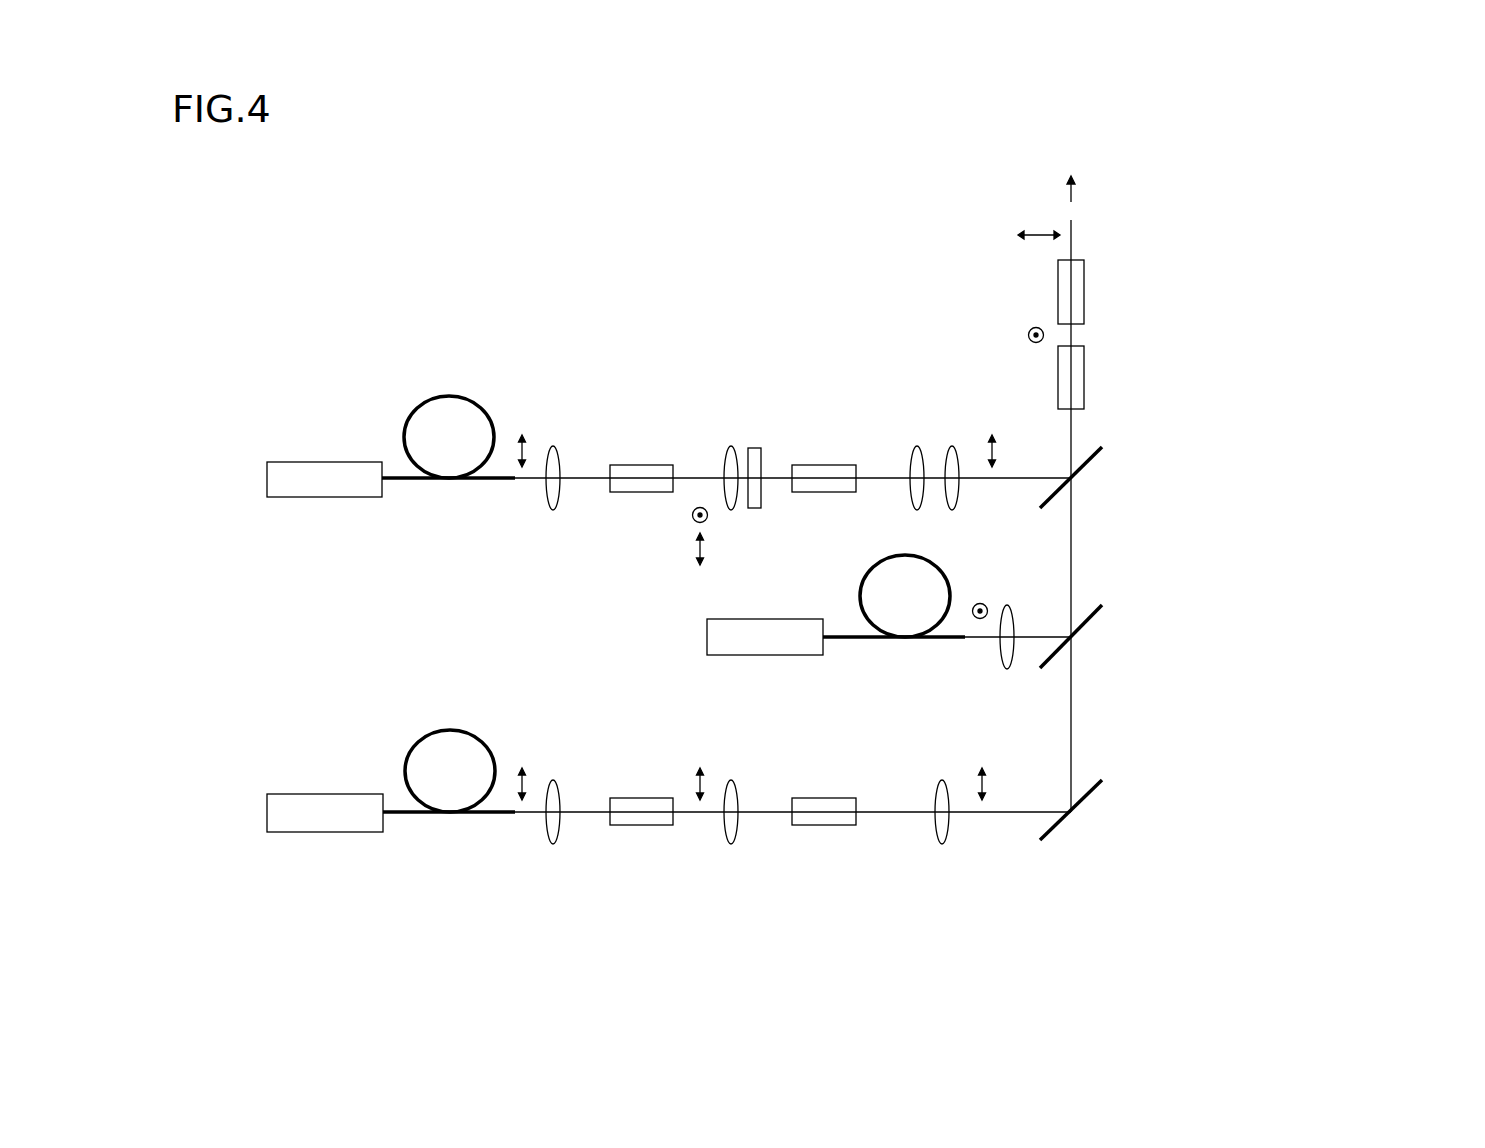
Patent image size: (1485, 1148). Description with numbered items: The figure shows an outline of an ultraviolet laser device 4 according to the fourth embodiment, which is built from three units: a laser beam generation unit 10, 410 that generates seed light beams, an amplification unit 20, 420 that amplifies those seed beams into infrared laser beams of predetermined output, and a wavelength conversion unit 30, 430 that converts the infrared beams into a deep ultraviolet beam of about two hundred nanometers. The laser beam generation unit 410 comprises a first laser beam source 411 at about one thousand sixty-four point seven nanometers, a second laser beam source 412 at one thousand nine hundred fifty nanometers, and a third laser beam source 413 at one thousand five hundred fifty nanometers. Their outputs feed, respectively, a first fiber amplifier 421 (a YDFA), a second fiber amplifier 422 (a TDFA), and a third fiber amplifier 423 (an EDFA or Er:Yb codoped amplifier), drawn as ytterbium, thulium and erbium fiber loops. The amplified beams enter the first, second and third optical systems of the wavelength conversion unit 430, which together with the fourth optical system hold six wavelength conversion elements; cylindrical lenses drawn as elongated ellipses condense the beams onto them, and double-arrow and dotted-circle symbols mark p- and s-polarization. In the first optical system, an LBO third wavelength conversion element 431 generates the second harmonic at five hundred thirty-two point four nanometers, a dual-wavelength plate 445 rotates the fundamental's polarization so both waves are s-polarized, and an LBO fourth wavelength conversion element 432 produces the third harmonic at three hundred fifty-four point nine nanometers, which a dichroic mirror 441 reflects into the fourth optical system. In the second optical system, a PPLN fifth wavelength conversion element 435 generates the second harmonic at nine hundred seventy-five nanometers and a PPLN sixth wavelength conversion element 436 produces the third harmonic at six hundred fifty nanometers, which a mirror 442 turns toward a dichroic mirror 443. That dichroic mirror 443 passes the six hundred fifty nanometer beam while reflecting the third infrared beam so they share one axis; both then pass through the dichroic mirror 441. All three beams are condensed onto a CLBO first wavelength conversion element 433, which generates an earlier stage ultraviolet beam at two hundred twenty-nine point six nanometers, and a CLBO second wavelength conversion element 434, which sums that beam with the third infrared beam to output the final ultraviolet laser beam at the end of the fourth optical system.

The ultraviolet laser device 4 is at (602, 150).
The seed light source unit 10 is at (508, 576).
The laser beam generation unit 410 is at (318, 300).
The fiber amplifier unit 20 is at (684, 566).
The amplification unit 420 is at (518, 300).
The wavelength conversion unit 30 is at (975, 572).
The wavelength conversion unit 430 is at (805, 298).
The first laser beam source 411 is at (332, 497).
The second laser beam source 412 is at (332, 832).
The third laser beam source 413 is at (748, 655).
The first fiber amplifier 421 is at (447, 480).
The second fiber amplifier 422 is at (447, 814).
The third fiber amplifier 423 is at (904, 639).
The third wavelength conversion element 431 is at (618, 492).
The fourth wavelength conversion element 432 is at (802, 492).
The first wavelength conversion element 433 is at (1058, 378).
The second wavelength conversion element 434 is at (1058, 292).
The fifth wavelength conversion element 435 is at (618, 825).
The sixth wavelength conversion element 436 is at (802, 825).
The dichroic mirror 441 is at (1088, 462).
The mirror 442 is at (1088, 797).
The dichroic mirror 443 is at (1088, 622).
The dual-wavelength plate 445 is at (756, 448).